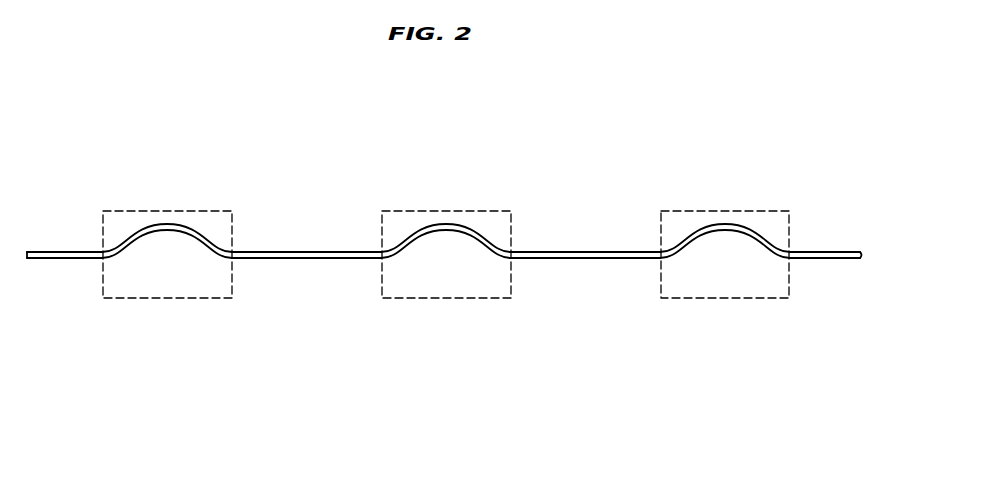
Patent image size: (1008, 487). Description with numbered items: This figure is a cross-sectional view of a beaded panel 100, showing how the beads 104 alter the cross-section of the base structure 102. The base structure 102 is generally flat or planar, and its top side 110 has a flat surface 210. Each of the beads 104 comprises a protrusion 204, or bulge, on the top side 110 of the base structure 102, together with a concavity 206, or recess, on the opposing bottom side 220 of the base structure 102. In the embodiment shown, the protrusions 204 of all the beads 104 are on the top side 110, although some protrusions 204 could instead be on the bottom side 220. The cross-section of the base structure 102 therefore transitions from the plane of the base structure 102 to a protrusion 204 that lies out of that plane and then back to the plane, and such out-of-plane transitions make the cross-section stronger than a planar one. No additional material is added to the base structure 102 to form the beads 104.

The beaded panel 100 is at (662, 108).
The base structure 102 is at (463, 242).
The beads 104 is at (210, 210).
The top side 110 is at (98, 153).
The protrusion 204 is at (167, 224).
The concavity 206 is at (167, 232).
The flat surface 210 is at (61, 250).
The bottom side 220 is at (95, 322).